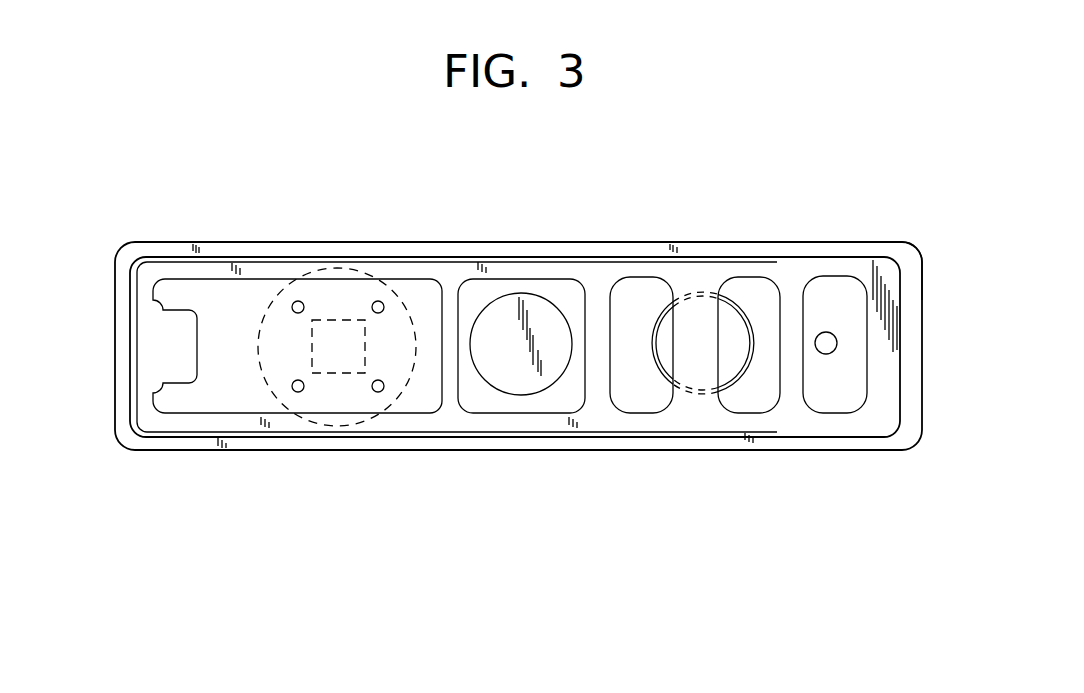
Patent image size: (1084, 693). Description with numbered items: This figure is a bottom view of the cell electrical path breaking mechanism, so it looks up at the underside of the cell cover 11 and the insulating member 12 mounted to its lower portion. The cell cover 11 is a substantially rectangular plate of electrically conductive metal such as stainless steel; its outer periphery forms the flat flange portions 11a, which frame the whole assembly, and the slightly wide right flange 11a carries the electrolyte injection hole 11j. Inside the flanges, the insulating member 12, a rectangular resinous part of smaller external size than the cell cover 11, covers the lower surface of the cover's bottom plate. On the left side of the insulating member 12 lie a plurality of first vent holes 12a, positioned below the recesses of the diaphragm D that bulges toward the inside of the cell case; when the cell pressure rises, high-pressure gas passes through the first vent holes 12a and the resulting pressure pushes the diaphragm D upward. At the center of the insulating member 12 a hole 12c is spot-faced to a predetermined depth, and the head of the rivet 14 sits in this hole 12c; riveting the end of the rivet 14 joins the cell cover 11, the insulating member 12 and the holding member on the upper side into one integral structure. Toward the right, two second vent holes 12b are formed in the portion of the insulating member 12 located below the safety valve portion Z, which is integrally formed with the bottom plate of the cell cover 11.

The cell cover 11 is at (809, 242).
The flat flange portions 11a is at (896, 248).
The electrolyte injection hole 11j is at (826, 338).
The insulating member 12 is at (428, 273).
The first vent holes 12a is at (298, 301).
The second vent holes 12b is at (627, 300).
The hole 12c is at (567, 310).
The rivet 14 is at (498, 334).
The diaphragm D is at (291, 349).
The safety valve portion Z is at (651, 323).